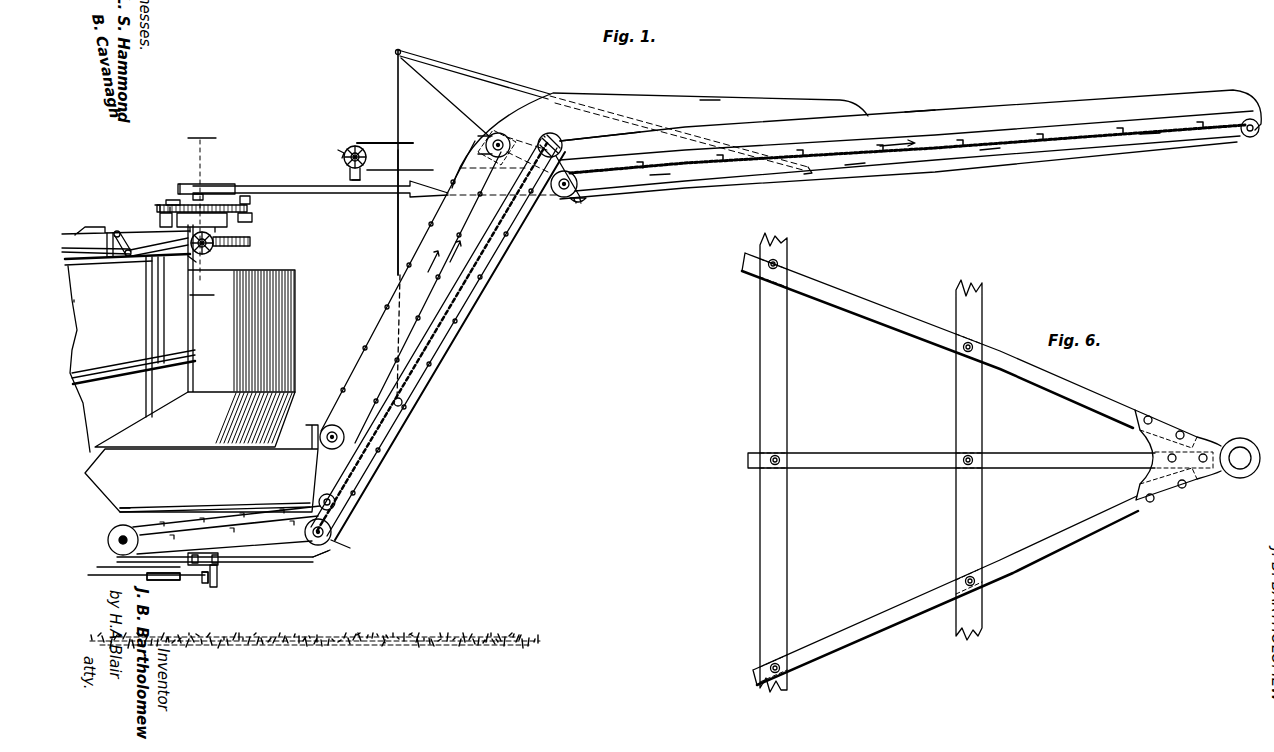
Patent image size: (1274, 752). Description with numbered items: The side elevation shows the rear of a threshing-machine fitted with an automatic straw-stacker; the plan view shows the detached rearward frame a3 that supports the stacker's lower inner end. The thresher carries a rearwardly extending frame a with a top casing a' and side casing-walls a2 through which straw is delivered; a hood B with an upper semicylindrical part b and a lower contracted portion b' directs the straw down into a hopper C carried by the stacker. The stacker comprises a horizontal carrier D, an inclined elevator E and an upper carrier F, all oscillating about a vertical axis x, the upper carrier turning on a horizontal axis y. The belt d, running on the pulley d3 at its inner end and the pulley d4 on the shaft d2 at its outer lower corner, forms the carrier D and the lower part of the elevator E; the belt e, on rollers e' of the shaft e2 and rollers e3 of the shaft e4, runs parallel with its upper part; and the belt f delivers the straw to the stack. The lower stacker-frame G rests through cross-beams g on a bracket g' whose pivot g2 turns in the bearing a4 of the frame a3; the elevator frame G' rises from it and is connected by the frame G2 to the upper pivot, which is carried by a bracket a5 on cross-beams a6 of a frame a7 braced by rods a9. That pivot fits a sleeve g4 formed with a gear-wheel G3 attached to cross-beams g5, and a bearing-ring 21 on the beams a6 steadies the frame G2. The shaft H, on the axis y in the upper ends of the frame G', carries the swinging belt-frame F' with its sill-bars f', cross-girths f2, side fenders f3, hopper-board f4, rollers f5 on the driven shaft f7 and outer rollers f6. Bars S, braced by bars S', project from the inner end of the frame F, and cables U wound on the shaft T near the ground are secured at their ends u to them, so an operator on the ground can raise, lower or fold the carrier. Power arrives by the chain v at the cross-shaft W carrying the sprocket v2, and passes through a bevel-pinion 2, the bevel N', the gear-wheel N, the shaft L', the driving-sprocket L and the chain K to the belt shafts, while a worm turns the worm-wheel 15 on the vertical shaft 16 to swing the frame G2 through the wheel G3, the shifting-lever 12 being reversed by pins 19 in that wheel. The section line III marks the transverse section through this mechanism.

In FIG. 1, the cable ends u is at (392, 155).
In FIG. 1, the ropes or cables U is at (398, 241).
In FIG. 1, the winding shaft T is at (404, 403).
In FIG. 1, the bars S is at (474, 73).
In FIG. 1, the supplemental bars S' is at (445, 97).
In FIG. 1, the upper carrier F is at (855, 142).
In FIG. 1, the outer swinging carrier-frame F' is at (902, 160).
In FIG. 1, the belt f is at (1015, 149).
In FIG. 1, the longitudinal sill-bars f' is at (850, 181).
In FIG. 1, the cross-girths f2 is at (661, 178).
In FIG. 1, the side fenders f3 is at (919, 112).
In FIG. 1, the fender or hopper-board f4 is at (706, 99).
In FIG. 1, the rollers f5 is at (585, 200).
In FIG. 1, the rollers f6 is at (1242, 137).
In FIG. 1, the shaft f7 is at (560, 198).
In FIG. 1, the shaft H is at (565, 146).
In FIG. 1, the horizontal axis y is at (556, 136).
In FIG. 1, the shaft e4 is at (506, 141).
In FIG. 1, the rollers e3 is at (484, 145).
In FIG. 1, the frame G2 is at (318, 188).
In FIG. 1, the chain K is at (394, 135).
In FIG. 1, the driving-sprocket L is at (352, 150).
In FIG. 1, the shaft L' is at (380, 165).
In FIG. 1, the gear-wheel N is at (328, 145).
In FIG. 1, the horizontal bevel N' is at (356, 196).
In FIG. 1, the section line III is at (202, 208).
In FIG. 1, the vertical axis x is at (206, 388).
In FIG. 1, the sleeve g4 is at (205, 190).
In FIG. 1, the cross-beams g5 is at (183, 188).
In FIG. 1, the bracket a5 is at (222, 203).
In FIG. 1, the gear-wheel G3 is at (251, 206).
In FIG. 1, the vertical shaft 16 is at (252, 217).
In FIG. 1, the cross-beams a6 is at (230, 223).
In FIG. 1, the pins 19 is at (163, 218).
In FIG. 1, the bevel-pinion 2 is at (167, 203).
In FIG. 1, the bearing-ring 21 is at (157, 205).
In FIG. 1, the rear cross-shaft W is at (206, 254).
In FIG. 1, the worm-wheel 15 is at (252, 242).
In FIG. 1, the shifting-lever 12 is at (159, 244).
In FIG. 1, the sprocket v2 is at (195, 259).
In FIG. 1, the rods a9 is at (92, 232).
In FIG. 1, the frame a7 is at (146, 230).
In FIG. 1, the chain v is at (78, 255).
In FIG. 1, the frame a is at (130, 353).
In FIG. 1, the side casing-walls a2 is at (88, 315).
In FIG. 1, the hood or receptacle B is at (241, 308).
In FIG. 1, the upper semicylindrical part b is at (270, 331).
In FIG. 1, the lower contracted portion b' is at (200, 419).
In FIG. 1, the hopper or receiver C is at (201, 468).
In FIG. 1, the horizontal carrier D is at (116, 538).
In FIG. 1, the belt d is at (258, 514).
In FIG. 1, the pulley d3 is at (127, 528).
In FIG. 1, the top casing a' is at (105, 540).
In FIG. 1, the frame a3 is at (103, 573).
In FIG. 6, the frame a3 is at (948, 462).
In FIG. 1, the cross-beams g is at (206, 558).
In FIG. 1, the bracket g' is at (225, 584).
In FIG. 1, the journal or pivot g2 is at (203, 582).
In FIG. 1, the bearing a4 is at (196, 580).
In FIG. 6, the bearing a4 is at (1235, 447).
In FIG. 1, the shaft e2 is at (332, 450).
In FIG. 1, the transverse shaft d2 is at (332, 533).
In FIG. 1, the pulley d4 is at (334, 546).
In FIG. 1, the stacker-frame G is at (322, 562).
In FIG. 1, the inclined elevator E is at (428, 297).
In FIG. 1, the belt e is at (398, 286).
In FIG. 1, the rollers e' is at (319, 437).
In FIG. 1, the frame G' is at (438, 339).